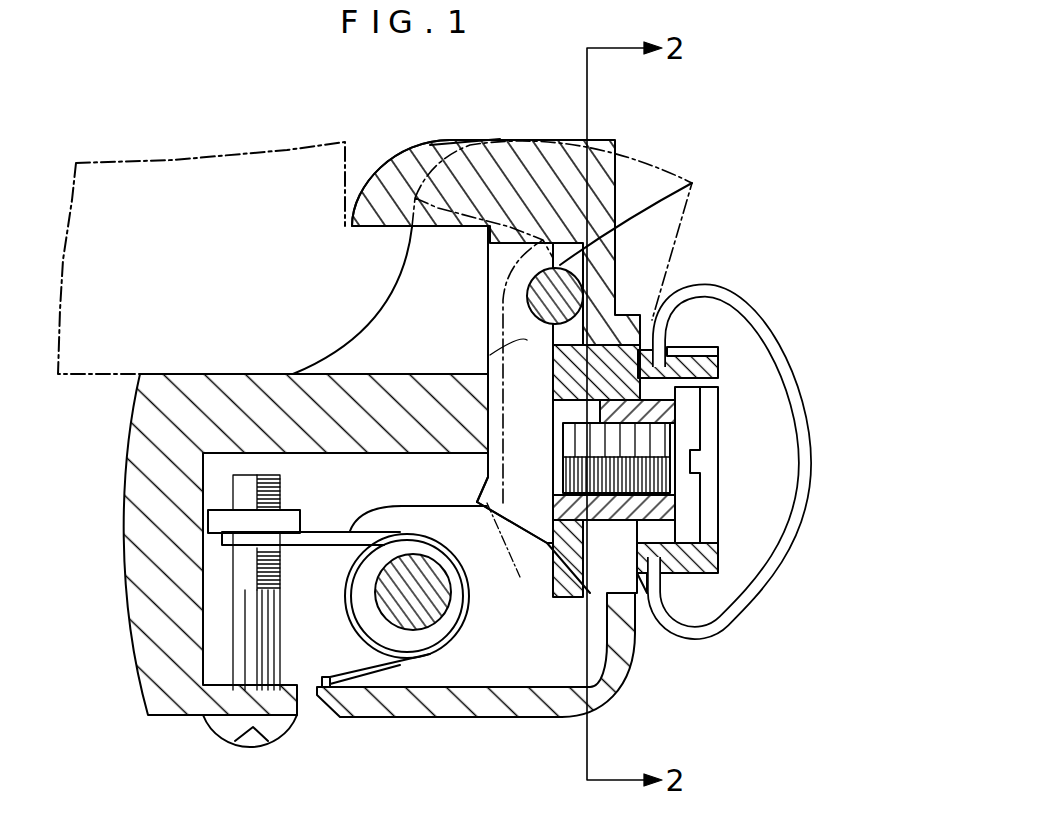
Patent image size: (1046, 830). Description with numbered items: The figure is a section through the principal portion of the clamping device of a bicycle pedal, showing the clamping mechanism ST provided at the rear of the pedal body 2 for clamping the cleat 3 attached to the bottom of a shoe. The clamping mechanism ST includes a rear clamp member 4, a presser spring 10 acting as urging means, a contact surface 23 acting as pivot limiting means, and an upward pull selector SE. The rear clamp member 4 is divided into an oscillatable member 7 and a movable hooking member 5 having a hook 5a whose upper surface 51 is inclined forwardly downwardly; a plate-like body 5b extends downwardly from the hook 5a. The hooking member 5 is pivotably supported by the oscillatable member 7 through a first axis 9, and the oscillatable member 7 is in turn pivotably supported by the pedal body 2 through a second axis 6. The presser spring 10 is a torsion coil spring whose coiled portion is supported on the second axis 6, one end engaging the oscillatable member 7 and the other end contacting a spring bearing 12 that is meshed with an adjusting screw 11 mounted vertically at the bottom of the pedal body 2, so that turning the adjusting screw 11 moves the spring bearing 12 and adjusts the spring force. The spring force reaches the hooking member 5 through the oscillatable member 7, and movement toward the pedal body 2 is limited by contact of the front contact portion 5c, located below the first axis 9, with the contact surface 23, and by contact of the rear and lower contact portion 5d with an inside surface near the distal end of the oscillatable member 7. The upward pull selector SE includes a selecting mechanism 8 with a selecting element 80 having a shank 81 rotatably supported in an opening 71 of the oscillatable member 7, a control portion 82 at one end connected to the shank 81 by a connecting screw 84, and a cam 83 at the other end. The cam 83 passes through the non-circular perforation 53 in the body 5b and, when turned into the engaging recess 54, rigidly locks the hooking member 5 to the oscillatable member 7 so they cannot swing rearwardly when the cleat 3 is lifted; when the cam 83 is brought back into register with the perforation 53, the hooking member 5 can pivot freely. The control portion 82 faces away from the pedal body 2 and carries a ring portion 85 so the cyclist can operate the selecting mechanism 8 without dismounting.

The pedal body 2 is at (117, 454).
The cleat 3 is at (162, 152).
The rear clamp member 4 is at (656, 150).
The hooking member 5 is at (595, 130).
The hook 5a is at (432, 148).
The plate-like body 5b is at (615, 285).
The front contact portion 5c is at (483, 478).
The rear and lower contact portion 5d is at (628, 607).
The second axis 6 is at (425, 620).
The oscillatable member 7 is at (624, 691).
The selecting mechanism 8 is at (876, 326).
The first axis 9 is at (692, 183).
The presser spring 10 is at (380, 690).
The adjusting screw 11 is at (228, 727).
The spring bearing 12 is at (290, 515).
The contact surface 23 is at (487, 368).
The upper surface 51 is at (381, 168).
The non-circular perforation 53 is at (542, 550).
The engaging recess 54 is at (527, 340).
The opening 71 is at (580, 515).
The selecting element 80 is at (736, 370).
The shank 81 is at (690, 413).
The control portion 82 is at (705, 347).
The cam 83 is at (680, 345).
The connecting screw 84 is at (655, 447).
The ring portion 85 is at (790, 545).
The clamping mechanism ST is at (781, 148).
The upward pull selector SE is at (857, 270).